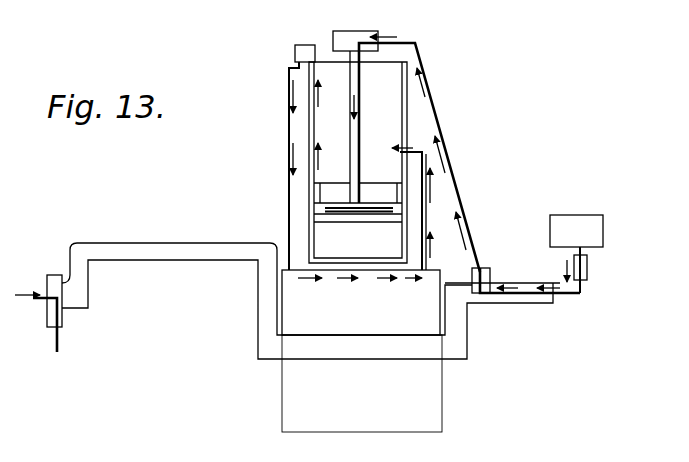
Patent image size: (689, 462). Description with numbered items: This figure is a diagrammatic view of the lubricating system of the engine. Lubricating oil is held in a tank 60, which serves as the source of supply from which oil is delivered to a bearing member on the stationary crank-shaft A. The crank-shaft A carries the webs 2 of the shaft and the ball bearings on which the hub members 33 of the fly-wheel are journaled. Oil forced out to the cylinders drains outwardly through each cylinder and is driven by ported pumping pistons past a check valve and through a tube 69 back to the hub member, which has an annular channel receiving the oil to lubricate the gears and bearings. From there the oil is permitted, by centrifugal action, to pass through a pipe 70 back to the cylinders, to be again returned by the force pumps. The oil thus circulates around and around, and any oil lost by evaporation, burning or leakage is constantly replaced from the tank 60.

The tube 69 is at (288, 178).
The pipe 70 is at (433, 216).
The tank 60 is at (576, 244).
The hub members 33 is at (472, 318).
The webs of the shaft 2 is at (307, 301).
The stationary crank-shaft A is at (70, 312).